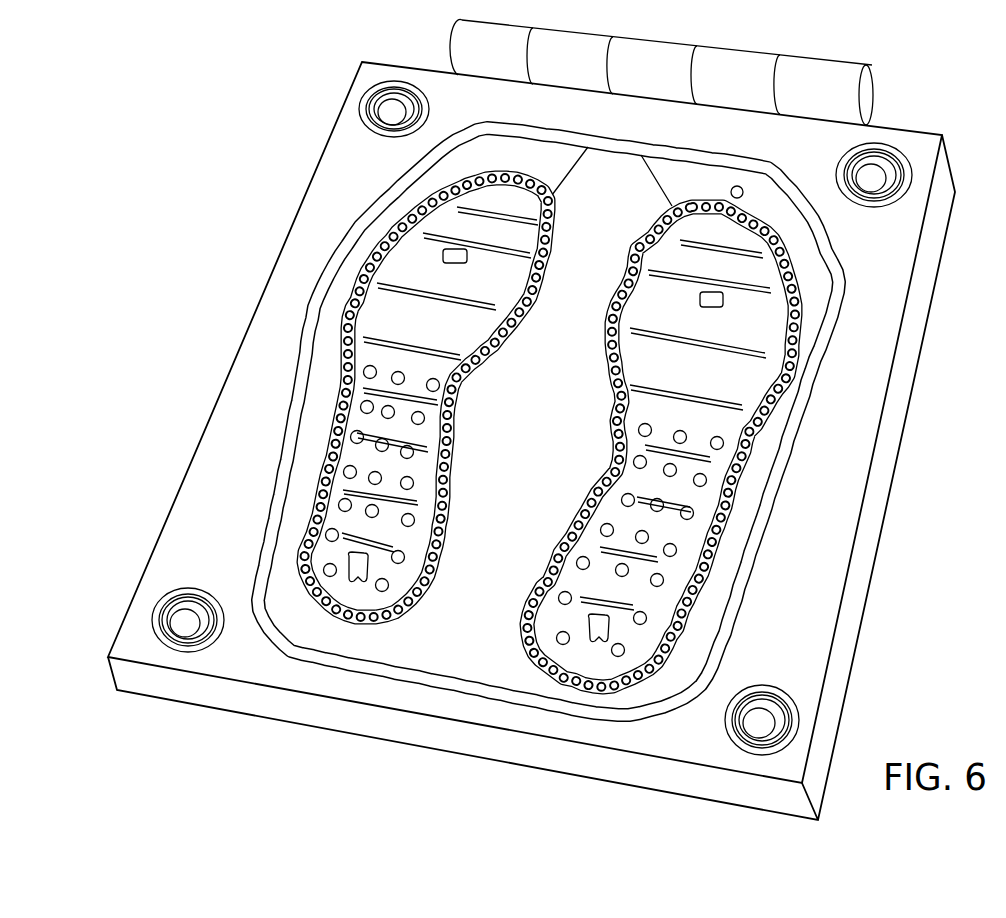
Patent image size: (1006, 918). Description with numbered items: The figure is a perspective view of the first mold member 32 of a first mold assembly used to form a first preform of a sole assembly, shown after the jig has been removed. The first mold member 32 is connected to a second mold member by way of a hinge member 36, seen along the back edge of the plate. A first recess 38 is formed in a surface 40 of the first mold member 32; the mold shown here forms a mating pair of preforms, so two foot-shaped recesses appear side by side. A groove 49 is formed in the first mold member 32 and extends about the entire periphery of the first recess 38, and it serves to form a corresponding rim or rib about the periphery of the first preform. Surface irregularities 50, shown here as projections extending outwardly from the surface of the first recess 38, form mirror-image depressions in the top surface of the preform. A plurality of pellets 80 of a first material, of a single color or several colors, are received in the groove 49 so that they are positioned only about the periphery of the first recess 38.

The first mold member 32 is at (906, 365).
The hinge member 36 is at (872, 100).
The first recess 38 is at (612, 591).
The surface 40 is at (784, 672).
The groove 49 is at (792, 333).
The surface irregularities 50 is at (678, 430).
The pellets 80 is at (770, 385).